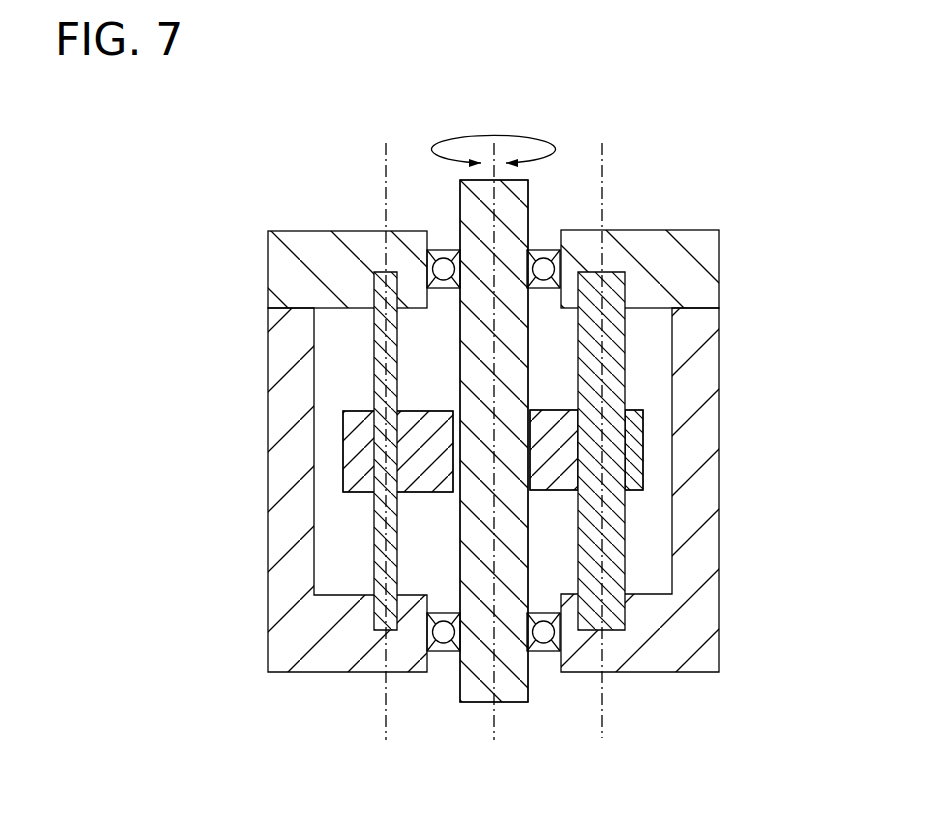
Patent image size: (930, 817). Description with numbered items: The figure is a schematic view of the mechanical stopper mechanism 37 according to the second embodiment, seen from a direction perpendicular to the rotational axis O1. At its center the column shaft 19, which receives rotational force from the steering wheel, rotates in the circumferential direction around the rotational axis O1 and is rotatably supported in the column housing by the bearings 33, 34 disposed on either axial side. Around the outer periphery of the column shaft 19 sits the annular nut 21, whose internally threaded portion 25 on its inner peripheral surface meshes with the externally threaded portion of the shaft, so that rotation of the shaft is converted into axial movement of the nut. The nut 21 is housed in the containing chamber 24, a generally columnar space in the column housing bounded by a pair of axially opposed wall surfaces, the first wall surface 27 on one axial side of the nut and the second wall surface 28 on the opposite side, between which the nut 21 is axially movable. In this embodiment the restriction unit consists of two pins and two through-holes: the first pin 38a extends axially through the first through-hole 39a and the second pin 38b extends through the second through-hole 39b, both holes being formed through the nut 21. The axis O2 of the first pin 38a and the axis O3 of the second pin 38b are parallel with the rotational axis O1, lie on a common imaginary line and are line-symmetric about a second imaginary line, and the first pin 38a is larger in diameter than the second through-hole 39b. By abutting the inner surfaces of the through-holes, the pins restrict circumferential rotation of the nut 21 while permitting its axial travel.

The column shaft 19 is at (452, 674).
The nut 21 is at (657, 453).
The containing chamber 24 is at (647, 568).
The internally threaded portion 25 is at (531, 492).
The first wall surface 27 is at (330, 310).
The second wall surface 28 is at (320, 590).
The bearing 33 is at (531, 250).
The bearing 34 is at (532, 652).
The mechanical stopper mechanism 37 is at (638, 352).
The first pin 38a is at (610, 530).
The second pin 38b is at (373, 517).
The first through-hole 39a is at (622, 396).
The second through-hole 39b is at (375, 406).
The rotational axis O1 is at (493, 178).
The axis of the first pin O2 is at (602, 187).
The axis of the second pin O3 is at (386, 185).